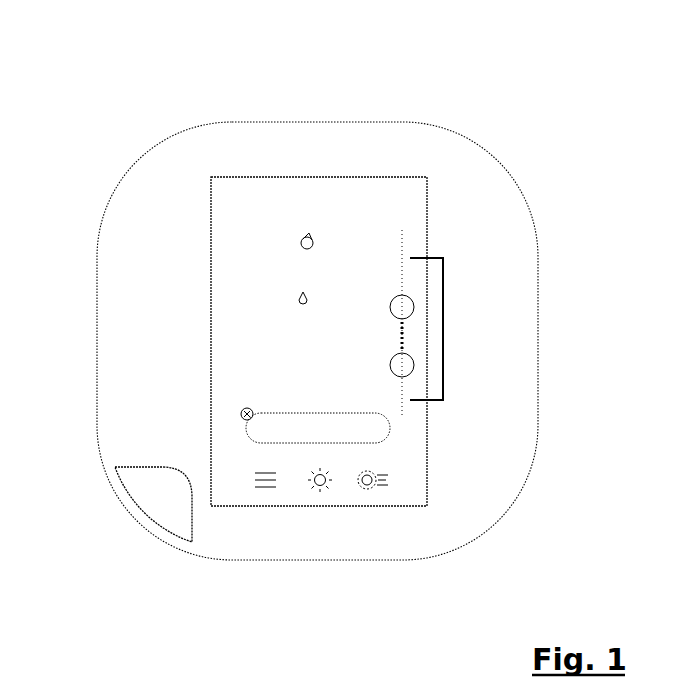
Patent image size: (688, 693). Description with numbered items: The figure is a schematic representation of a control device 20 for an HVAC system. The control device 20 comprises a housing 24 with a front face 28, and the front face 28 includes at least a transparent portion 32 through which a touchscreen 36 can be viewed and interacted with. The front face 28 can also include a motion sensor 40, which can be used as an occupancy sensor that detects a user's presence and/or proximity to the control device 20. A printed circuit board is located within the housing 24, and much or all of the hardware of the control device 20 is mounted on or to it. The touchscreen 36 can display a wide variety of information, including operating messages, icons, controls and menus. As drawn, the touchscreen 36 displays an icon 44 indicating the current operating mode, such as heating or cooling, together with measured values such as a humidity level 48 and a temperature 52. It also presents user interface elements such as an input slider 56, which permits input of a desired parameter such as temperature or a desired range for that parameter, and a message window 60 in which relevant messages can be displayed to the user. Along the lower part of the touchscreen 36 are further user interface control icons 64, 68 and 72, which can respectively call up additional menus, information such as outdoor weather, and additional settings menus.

The control device 20 is at (506, 136).
The housing 24 is at (538, 270).
The front face 28 is at (490, 197).
The transparent portion 32 is at (347, 173).
The touchscreen 36 is at (234, 217).
The motion sensor 40 is at (165, 503).
The icon 44 is at (299, 243).
The humidity level 48 is at (296, 298).
The temperature 52 is at (272, 338).
The input slider 56 is at (443, 330).
The message window 60 is at (244, 428).
The user interface control icon 64 is at (267, 493).
The user interface control icon 68 is at (323, 497).
The user interface control icon 72 is at (372, 498).